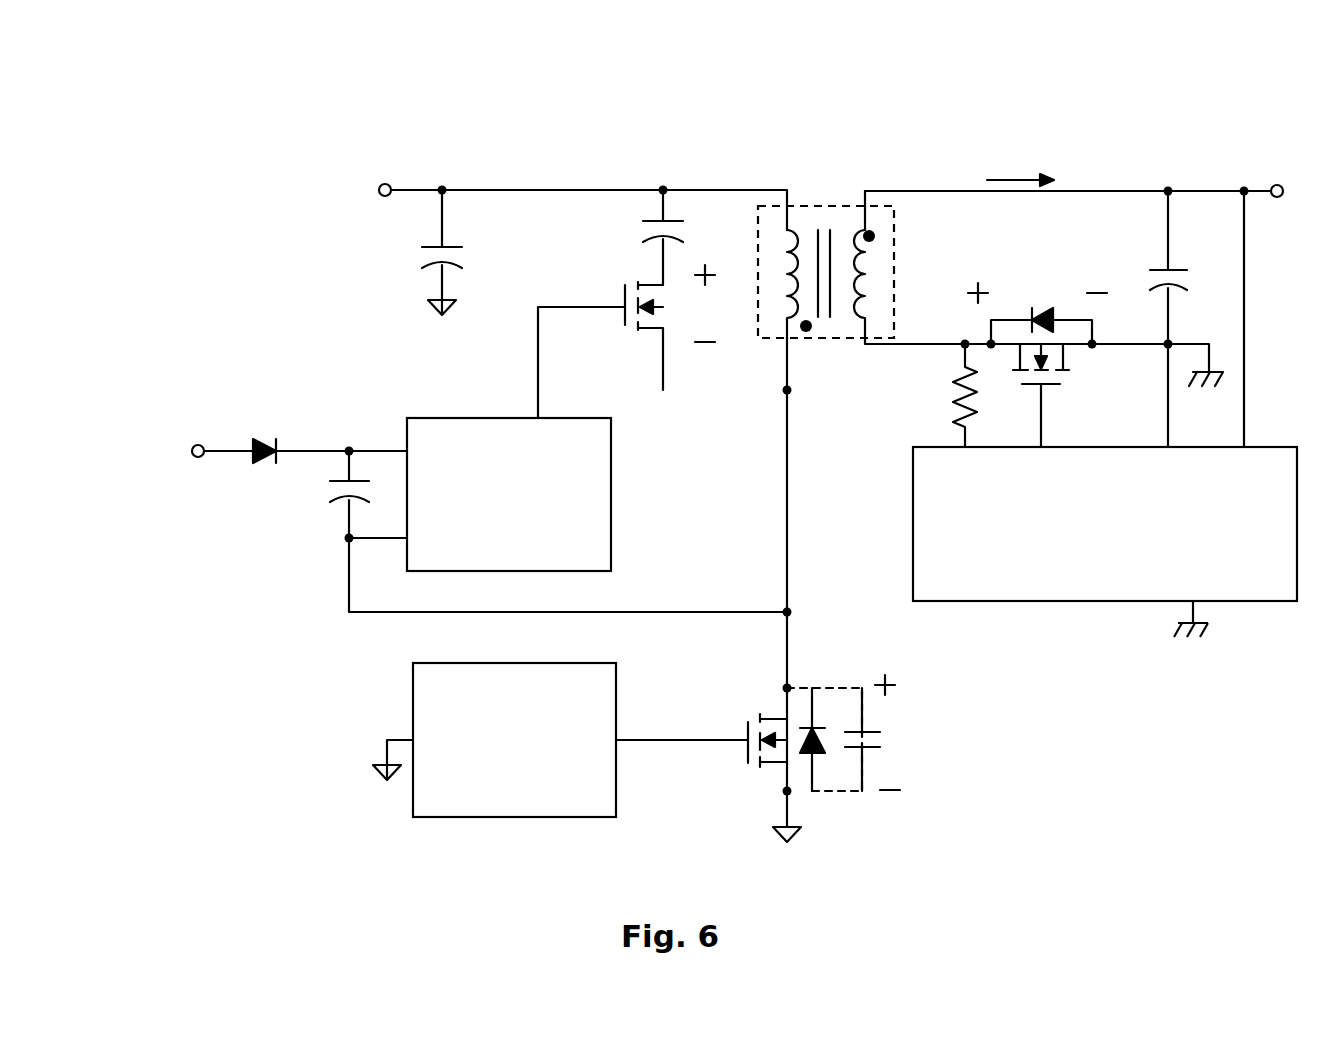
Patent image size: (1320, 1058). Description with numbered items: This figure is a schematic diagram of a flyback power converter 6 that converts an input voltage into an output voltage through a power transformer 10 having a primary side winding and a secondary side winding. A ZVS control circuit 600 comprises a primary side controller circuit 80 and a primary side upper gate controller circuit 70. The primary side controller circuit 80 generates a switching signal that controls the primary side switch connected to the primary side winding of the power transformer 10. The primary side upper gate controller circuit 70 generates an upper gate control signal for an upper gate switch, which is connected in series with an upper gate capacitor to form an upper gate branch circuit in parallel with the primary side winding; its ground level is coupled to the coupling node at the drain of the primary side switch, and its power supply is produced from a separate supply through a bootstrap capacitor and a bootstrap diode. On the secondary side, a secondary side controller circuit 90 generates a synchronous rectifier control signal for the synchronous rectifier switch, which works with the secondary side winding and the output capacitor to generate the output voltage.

The flyback power converter 6 is at (500, 82).
The power transformer 10 is at (897, 219).
The primary side upper gate controller circuit 70 is at (490, 556).
The primary side controller circuit 80 is at (496, 800).
The secondary side controller circuit 90 is at (1069, 587).
The ZVS control circuit 600 is at (819, 617).